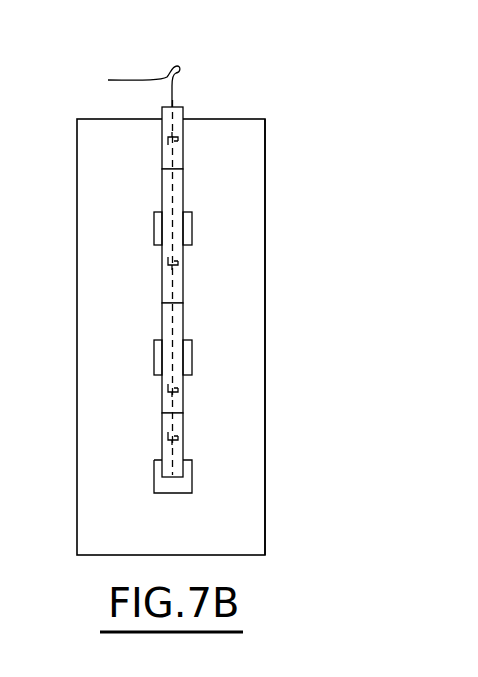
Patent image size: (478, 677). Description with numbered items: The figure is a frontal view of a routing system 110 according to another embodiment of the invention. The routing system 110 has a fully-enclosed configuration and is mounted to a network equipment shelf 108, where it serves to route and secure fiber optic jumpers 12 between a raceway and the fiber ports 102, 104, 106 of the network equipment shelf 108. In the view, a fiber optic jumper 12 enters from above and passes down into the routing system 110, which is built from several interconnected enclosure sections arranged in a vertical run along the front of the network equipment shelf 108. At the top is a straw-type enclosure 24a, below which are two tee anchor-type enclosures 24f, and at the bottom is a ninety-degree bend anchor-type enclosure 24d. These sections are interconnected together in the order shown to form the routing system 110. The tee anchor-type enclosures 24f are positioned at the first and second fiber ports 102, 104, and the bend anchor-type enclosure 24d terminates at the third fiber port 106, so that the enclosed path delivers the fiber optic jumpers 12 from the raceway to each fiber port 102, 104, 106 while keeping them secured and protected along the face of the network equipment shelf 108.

The fiber optic jumper 12 is at (112, 80).
The straw-type enclosure 24a is at (162, 158).
The tee anchor-type enclosure 24f is at (162, 197).
The 90° bend anchor-type enclosure 24d is at (162, 438).
The fiber port 102 is at (154, 232).
The fiber port 104 is at (154, 355).
The fiber port 106 is at (154, 472).
The network equipment shelf 108 is at (267, 469).
The routing system 110 is at (284, 176).